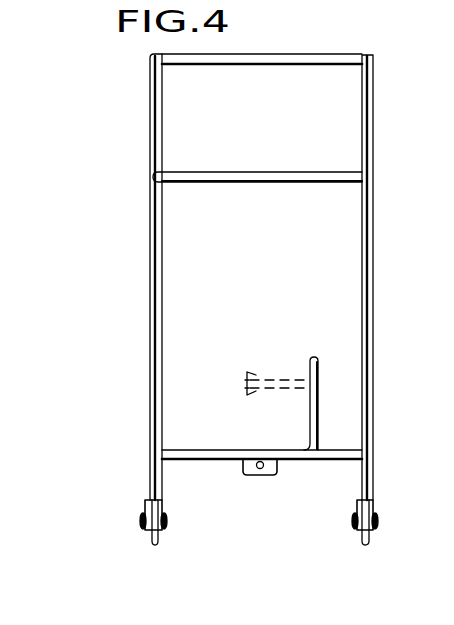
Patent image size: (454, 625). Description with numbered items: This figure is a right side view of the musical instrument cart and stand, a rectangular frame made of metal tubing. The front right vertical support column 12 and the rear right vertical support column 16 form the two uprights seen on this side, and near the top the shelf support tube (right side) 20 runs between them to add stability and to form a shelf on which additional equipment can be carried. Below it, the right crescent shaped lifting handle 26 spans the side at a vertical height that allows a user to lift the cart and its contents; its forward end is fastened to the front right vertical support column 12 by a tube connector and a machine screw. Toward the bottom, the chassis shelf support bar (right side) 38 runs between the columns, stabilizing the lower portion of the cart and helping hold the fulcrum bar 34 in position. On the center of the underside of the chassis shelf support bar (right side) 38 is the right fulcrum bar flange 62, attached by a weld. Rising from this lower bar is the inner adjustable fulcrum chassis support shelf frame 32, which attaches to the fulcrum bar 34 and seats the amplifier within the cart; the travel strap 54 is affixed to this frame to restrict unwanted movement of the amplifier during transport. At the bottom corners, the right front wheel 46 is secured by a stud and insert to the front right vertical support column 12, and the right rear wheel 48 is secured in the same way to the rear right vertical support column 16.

The front right vertical support column 12 is at (152, 277).
The rear right vertical support column 16 is at (367, 125).
The shelf support tube (right side) 20 is at (323, 55).
The right crescent shaped lifting handle 26 is at (323, 175).
The inner adjustable fulcrum chassis support shelf frame 32 is at (318, 372).
The fulcrum bar 34 is at (262, 469).
The chassis shelf support bar (right side) 38 is at (188, 456).
The right front wheel 46 is at (145, 521).
The right rear wheel 48 is at (371, 521).
The travel strap 54 is at (277, 379).
The right fulcrum bar flange 62 is at (246, 470).